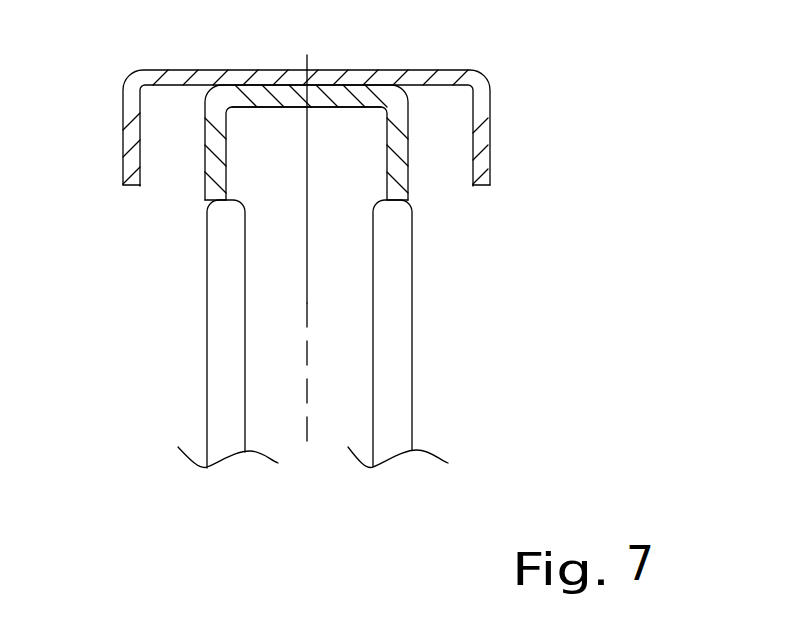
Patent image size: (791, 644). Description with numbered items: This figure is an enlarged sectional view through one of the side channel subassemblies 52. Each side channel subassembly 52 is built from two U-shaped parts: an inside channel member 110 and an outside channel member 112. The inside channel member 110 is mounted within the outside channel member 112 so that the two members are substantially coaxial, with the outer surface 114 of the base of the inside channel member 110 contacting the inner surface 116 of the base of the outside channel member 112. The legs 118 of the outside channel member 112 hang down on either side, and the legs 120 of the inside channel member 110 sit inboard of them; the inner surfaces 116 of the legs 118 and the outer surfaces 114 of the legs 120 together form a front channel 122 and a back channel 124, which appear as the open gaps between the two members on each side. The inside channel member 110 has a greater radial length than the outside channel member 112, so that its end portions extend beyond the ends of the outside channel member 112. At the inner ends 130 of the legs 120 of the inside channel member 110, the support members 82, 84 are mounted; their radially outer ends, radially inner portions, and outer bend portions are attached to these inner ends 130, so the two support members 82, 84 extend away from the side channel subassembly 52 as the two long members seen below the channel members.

The side channel subassembly 52 is at (120, 62).
The outside channel member 112 is at (400, 70).
The outer surface 114 is at (414, 148).
The inner surface 116 is at (468, 145).
The legs 118 is at (127, 136).
The legs 120 is at (205, 157).
The front channel 122 is at (443, 187).
The back channel 124 is at (167, 180).
The inside channel member 110 is at (283, 107).
The inner ends 130 is at (230, 187).
The support member 84 is at (220, 373).
The support member 82 is at (390, 358).